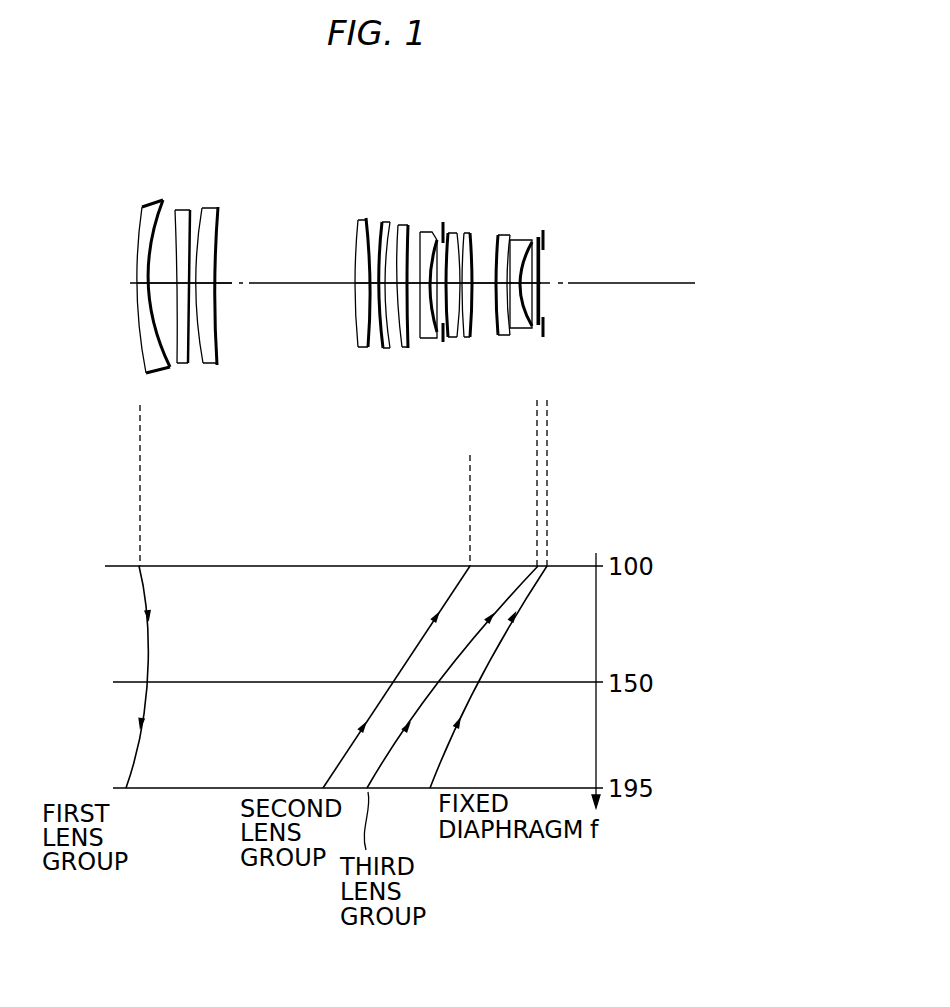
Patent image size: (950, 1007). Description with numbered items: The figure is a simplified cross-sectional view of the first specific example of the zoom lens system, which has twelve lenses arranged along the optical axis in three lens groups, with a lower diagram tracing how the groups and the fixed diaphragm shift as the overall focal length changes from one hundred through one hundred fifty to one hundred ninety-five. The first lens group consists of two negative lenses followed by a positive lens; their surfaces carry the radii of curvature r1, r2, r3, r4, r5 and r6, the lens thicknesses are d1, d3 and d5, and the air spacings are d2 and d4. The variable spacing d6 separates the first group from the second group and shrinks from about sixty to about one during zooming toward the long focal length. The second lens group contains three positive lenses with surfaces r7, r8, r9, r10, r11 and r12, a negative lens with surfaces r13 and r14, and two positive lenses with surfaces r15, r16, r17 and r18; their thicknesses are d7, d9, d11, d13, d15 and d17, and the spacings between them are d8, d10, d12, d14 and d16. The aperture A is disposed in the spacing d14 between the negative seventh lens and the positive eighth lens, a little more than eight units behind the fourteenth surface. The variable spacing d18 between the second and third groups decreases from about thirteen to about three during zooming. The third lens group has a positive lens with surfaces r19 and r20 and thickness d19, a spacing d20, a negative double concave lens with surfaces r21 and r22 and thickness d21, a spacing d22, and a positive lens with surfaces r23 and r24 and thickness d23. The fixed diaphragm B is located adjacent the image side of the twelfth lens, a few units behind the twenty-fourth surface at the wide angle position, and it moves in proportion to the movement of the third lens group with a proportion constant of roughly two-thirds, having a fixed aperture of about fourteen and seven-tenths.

The radius of curvature of first surface r1 is at (142, 207).
The radius of curvature of second surface r2 is at (163, 200).
The radius of curvature of third surface r3 is at (175, 210).
The radius of curvature of fourth surface r4 is at (190, 210).
The radius of curvature of fifth surface r5 is at (202, 208).
The radius of curvature of sixth surface r6 is at (218, 207).
The radius of curvature of seventh surface r7 is at (358, 222).
The radius of curvature of eighth surface r8 is at (366, 218).
The radius of curvature of ninth surface r9 is at (382, 222).
The radius of curvature of tenth surface r10 is at (390, 222).
The radius of curvature of eleventh surface r11 is at (398, 225).
The radius of curvature of twelfth surface r12 is at (408, 225).
The radius of curvature of thirteenth surface r13 is at (420, 232).
The radius of curvature of fourteenth surface r14 is at (437, 232).
The aperture A is at (443, 222).
The radius of curvature of fifteenth surface r15 is at (448, 233).
The radius of curvature of sixteenth surface r16 is at (458, 233).
The radius of curvature of seventeenth surface r17 is at (464, 233).
The radius of curvature of eighteenth surface r18 is at (471, 233).
The radius of curvature of nineteenth surface r19 is at (498, 235).
The radius of curvature of twentieth surface r20 is at (510, 235).
The radius of curvature of twenty-first surface r21 is at (512, 240).
The radius of curvature of twenty-second surface r22 is at (532, 242).
The radius of curvature of twenty-third surface r23 is at (538, 258).
The radius of curvature of twenty-fourth surface r24 is at (539, 265).
The fixed diaphragm B is at (543, 233).
The thickness of first lens d1 is at (140, 287).
The spacing between first and second lenses d2 is at (160, 288).
The thickness of second lens d3 is at (182, 290).
The spacing between second and third lenses d4 is at (193, 290).
The thickness of third lens d5 is at (207, 290).
The variable spacing between first and second lens groups d6 is at (284, 290).
The thickness of fourth lens d7 is at (362, 290).
The spacing between fourth and fifth lenses d8 is at (375, 290).
The thickness of fifth lens d9 is at (382, 292).
The spacing between fifth and sixth lenses d10 is at (391, 292).
The thickness of sixth lens d11 is at (402, 292).
The spacing between sixth and seventh lenses d12 is at (414, 292).
The thickness of seventh lens d13 is at (425, 292).
The spacing between seventh and eighth lenses d14 is at (438, 292).
The thickness of eighth lens d15 is at (453, 292).
The spacing between eighth and ninth lenses d16 is at (461, 292).
The thickness of ninth lens d17 is at (468, 292).
The variable spacing between second and third lens groups d18 is at (485, 292).
The thickness of tenth lens d19 is at (504, 292).
The spacing between tenth and eleventh lenses d20 is at (510, 292).
The thickness of eleventh lens d21 is at (516, 292).
The spacing between eleventh and twelfth lenses d22 is at (535, 292).
The thickness of twelfth lens d23 is at (540, 290).